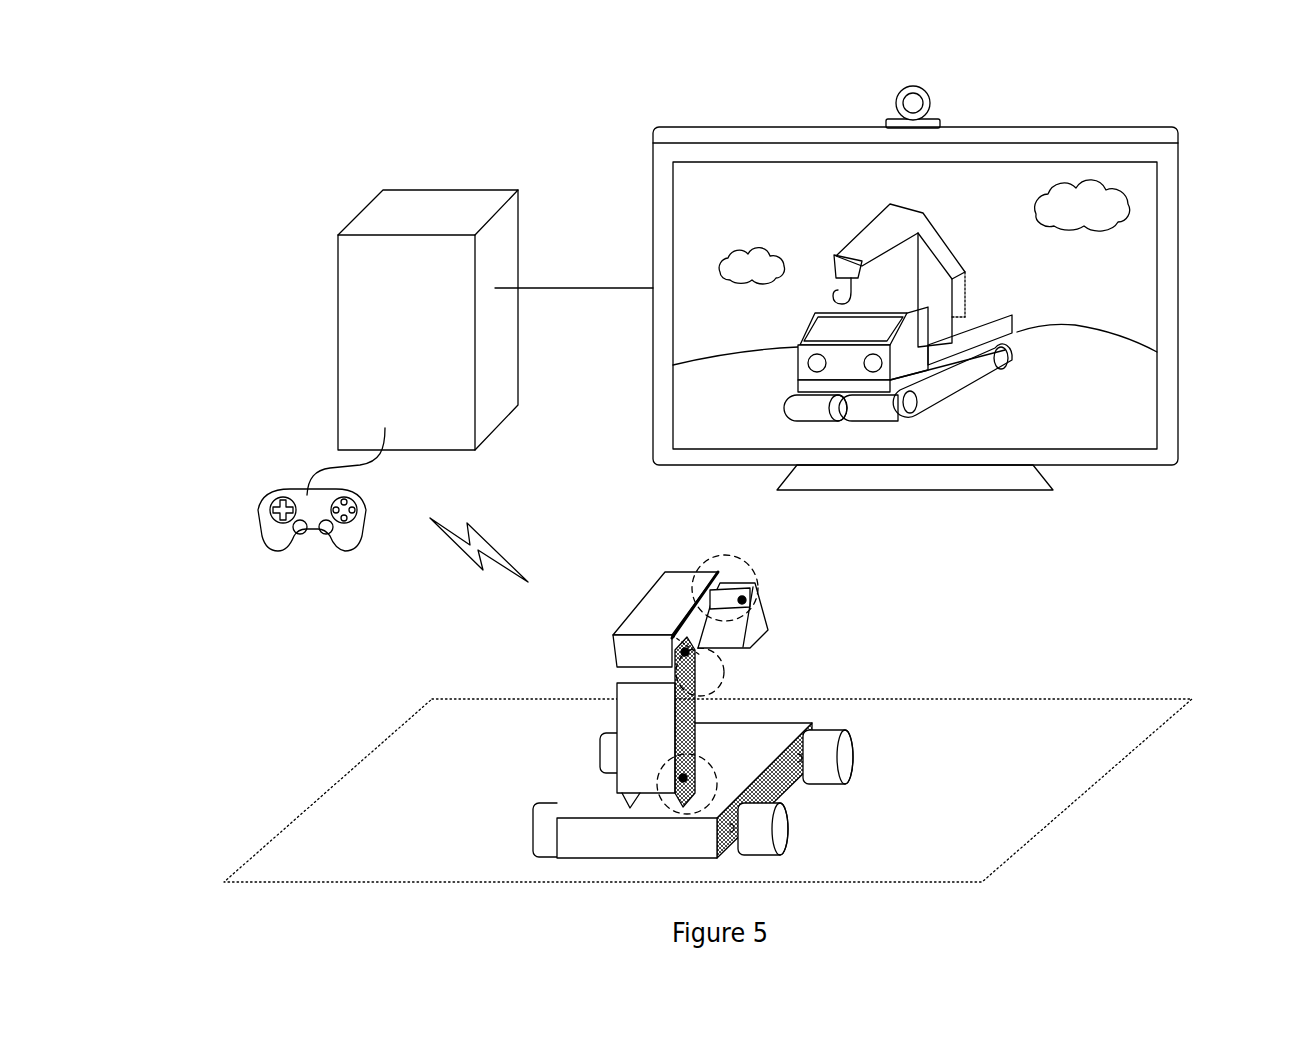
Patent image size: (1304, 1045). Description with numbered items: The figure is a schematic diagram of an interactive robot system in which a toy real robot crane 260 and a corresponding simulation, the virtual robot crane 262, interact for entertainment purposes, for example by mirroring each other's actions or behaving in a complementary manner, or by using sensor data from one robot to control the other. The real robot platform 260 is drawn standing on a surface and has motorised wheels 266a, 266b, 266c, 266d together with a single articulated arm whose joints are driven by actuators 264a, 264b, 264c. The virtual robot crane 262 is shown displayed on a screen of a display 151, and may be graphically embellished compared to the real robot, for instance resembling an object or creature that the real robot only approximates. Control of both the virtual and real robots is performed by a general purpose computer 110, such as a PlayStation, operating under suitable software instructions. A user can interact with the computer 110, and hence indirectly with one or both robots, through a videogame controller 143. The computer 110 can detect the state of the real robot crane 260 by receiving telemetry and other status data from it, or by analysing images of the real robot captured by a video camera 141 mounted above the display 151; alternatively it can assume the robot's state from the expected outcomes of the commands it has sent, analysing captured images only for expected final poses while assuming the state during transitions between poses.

The general purpose computer 110 is at (338, 374).
The video camera 141 is at (918, 87).
The videogame controller 143 is at (262, 540).
The display device 151 is at (965, 283).
The real robot crane 260 is at (683, 700).
The virtual robot crane 262 is at (857, 226).
The actuator 264a is at (750, 562).
The actuator 264b is at (722, 673).
The actuator 264c is at (716, 798).
The motorised wheel 266a is at (853, 735).
The motorised wheel 266b is at (788, 848).
The motorised wheel 266c is at (533, 818).
The motorised wheel 266d is at (600, 755).